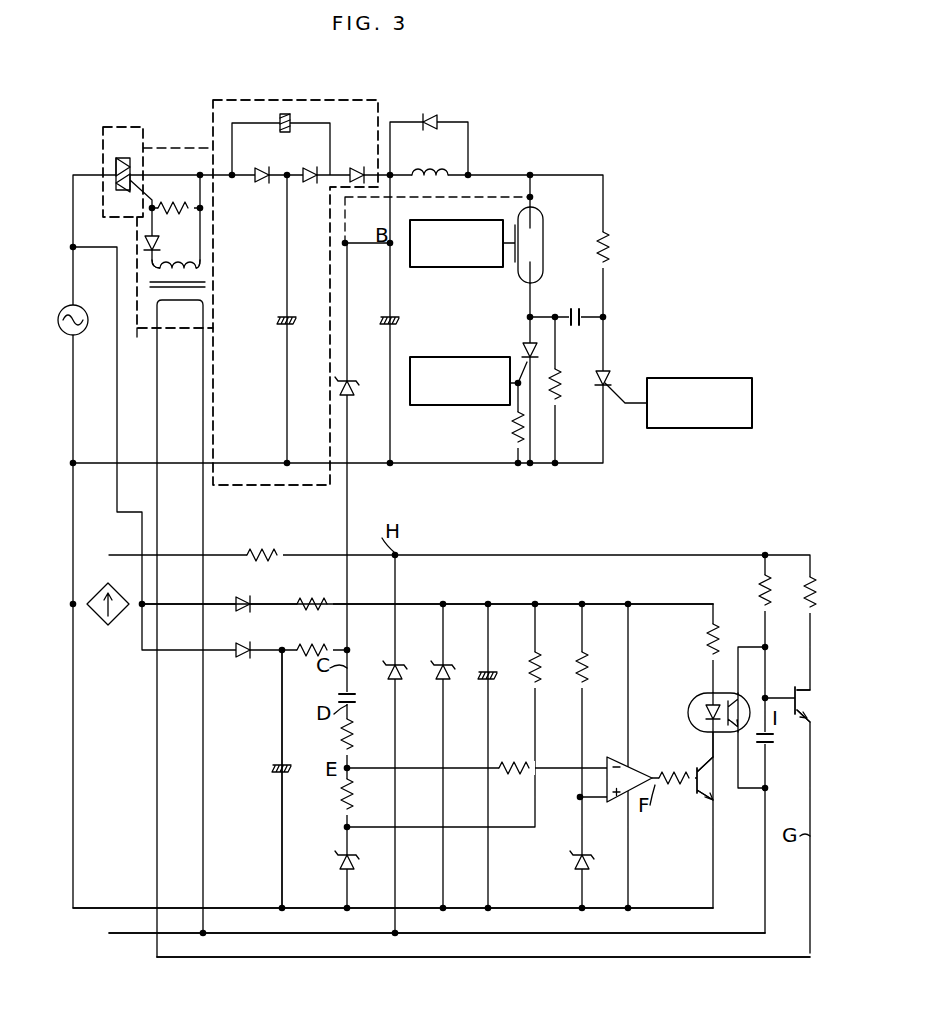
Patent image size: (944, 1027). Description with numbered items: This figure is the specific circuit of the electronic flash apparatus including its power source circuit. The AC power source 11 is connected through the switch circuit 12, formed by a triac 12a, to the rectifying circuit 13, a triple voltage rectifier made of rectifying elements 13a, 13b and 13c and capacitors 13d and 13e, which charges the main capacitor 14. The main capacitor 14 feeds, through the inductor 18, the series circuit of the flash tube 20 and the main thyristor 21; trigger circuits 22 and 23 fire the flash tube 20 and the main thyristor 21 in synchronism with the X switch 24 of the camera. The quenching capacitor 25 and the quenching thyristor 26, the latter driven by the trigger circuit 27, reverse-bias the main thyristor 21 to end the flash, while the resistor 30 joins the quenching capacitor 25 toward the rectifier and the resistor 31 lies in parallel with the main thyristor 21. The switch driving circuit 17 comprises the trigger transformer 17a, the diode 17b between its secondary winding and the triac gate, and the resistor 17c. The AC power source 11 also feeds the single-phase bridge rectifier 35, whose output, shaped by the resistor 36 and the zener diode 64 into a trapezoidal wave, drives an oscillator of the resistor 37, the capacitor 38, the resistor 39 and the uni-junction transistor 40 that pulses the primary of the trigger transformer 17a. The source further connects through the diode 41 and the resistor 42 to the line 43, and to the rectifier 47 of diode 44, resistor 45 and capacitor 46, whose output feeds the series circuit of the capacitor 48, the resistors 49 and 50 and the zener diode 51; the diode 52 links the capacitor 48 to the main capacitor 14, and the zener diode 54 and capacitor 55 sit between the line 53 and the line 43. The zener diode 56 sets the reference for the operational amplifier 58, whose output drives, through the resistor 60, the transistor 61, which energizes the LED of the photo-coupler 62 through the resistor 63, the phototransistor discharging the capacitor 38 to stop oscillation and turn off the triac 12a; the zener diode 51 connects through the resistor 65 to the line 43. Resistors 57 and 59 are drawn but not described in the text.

The AC power source 11 is at (80, 332).
The switch circuit 12 is at (125, 127).
The triac 12a is at (114, 167).
The rectifying circuit 13 is at (262, 100).
The rectifying element 13a is at (263, 183).
The rectifying element 13b is at (310, 184).
The rectifying element 13c is at (357, 168).
The capacitor 13d is at (283, 130).
The capacitor 13e is at (285, 314).
The main capacitor 14 is at (383, 318).
The switch driving circuit 17 is at (430, 106).
The trigger transformer 17a is at (202, 268).
The diode 17b is at (158, 243).
The resistor 17c is at (174, 197).
The inductor 18 is at (432, 170).
The flash tube 20 is at (543, 220).
The main thyristor 21 is at (524, 350).
The trigger circuit 22 is at (428, 268).
The trigger circuit 23 is at (443, 357).
The X switch 24 is at (518, 430).
The quenching capacitor 25 is at (575, 308).
The quenching thyristor 26 is at (608, 370).
The trigger circuit 27 is at (692, 378).
The resistor 30 is at (606, 246).
The resistor 31 is at (560, 393).
The single-phase bridge rectifier 35 is at (115, 620).
The resistor 36 is at (267, 550).
The resistor 37 is at (760, 588).
The capacitor 38 is at (772, 738).
The resistor 39 is at (808, 593).
The uni-junction transistor 40 is at (797, 687).
The diode 41 is at (243, 597).
The resistor 42 is at (315, 597).
The line 43 is at (470, 603).
The diode 44 is at (246, 659).
The resistor 45 is at (315, 645).
The capacitor 46 is at (290, 762).
The rectifier 47 is at (269, 716).
The capacitor 48 is at (355, 700).
The resistor 49 is at (355, 738).
The resistor 50 is at (355, 798).
The zener diode 51 is at (342, 868).
The diode 52 is at (353, 390).
The line 53 is at (333, 910).
The zener diode 54 is at (450, 668).
The capacitor 55 is at (495, 670).
The zener diode 56 is at (590, 865).
The resistor 57 is at (588, 665).
The operational amplifier 58 is at (640, 766).
The resistor 59 is at (517, 775).
The resistor 60 is at (677, 785).
The transistor 61 is at (712, 790).
The photo-coupler 62 is at (690, 703).
The resistor 63 is at (710, 642).
The zener diode 64 is at (402, 668).
The resistor 65 is at (540, 665).